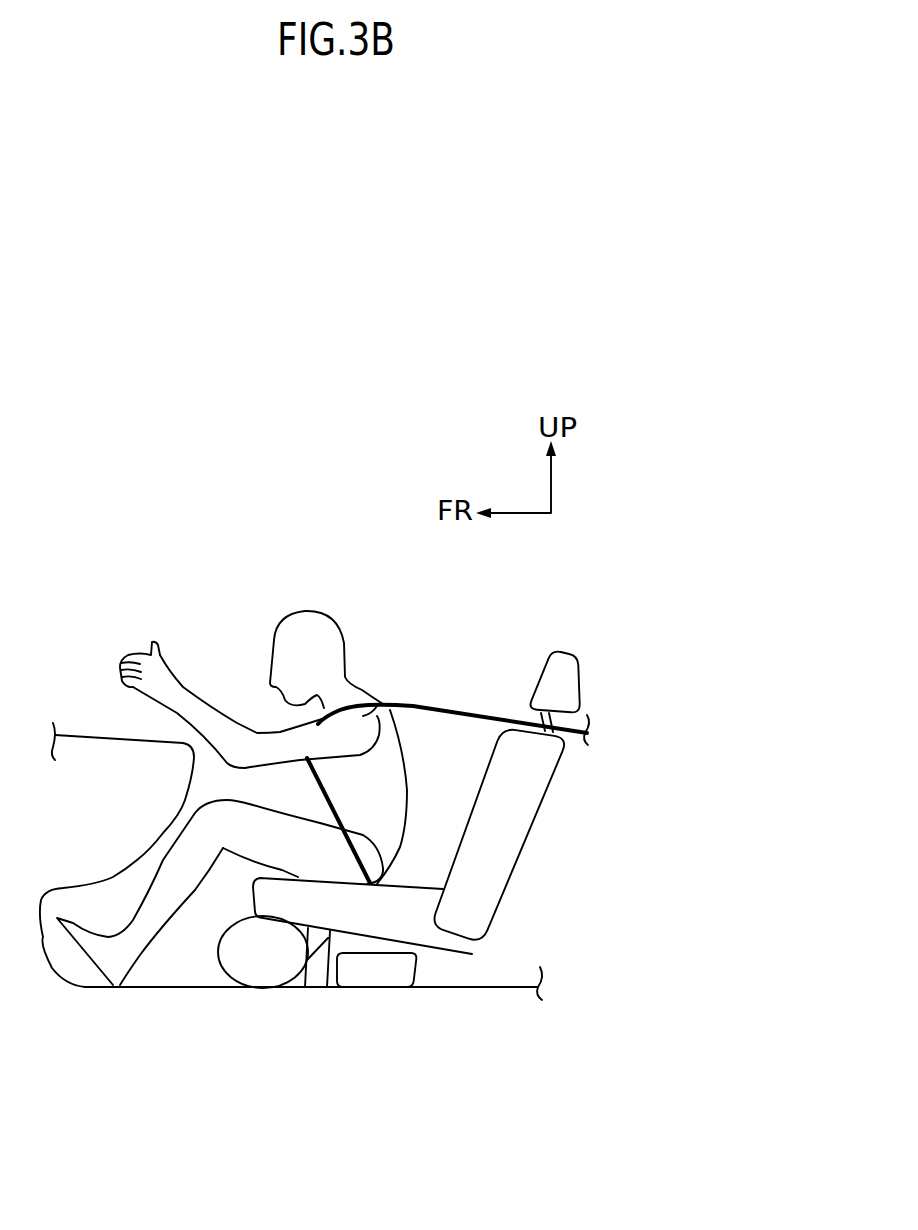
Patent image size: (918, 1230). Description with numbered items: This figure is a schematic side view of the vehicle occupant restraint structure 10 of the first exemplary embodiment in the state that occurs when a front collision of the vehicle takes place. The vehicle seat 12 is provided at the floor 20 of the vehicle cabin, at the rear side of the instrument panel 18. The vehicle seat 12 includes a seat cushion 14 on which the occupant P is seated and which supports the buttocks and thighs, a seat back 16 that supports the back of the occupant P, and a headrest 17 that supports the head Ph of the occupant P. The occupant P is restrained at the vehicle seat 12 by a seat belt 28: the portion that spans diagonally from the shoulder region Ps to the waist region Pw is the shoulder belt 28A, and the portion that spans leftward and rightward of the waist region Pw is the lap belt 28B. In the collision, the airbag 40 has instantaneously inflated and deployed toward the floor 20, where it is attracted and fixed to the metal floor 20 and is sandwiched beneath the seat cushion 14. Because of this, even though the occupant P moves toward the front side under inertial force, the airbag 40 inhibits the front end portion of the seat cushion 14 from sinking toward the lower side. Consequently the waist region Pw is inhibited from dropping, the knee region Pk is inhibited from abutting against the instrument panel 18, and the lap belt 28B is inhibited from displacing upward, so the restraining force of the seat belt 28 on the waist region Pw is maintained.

The vehicle occupant restraint structure 10 is at (391, 824).
The vehicle seat 12 is at (560, 765).
The seat cushion 14 is at (377, 917).
The seat back 16 is at (517, 832).
The headrest 17 is at (565, 663).
The instrument panel 18 is at (197, 766).
The floor 20 is at (497, 985).
The seat belt 28 is at (443, 829).
The shoulder belt 28A is at (392, 706).
The lap belt 28B is at (353, 867).
The airbag 40 is at (204, 950).
The occupant P is at (273, 777).
The head Ph is at (290, 625).
The shoulder region Ps is at (390, 710).
The knee region Pk is at (197, 807).
The waist region Pw is at (388, 848).